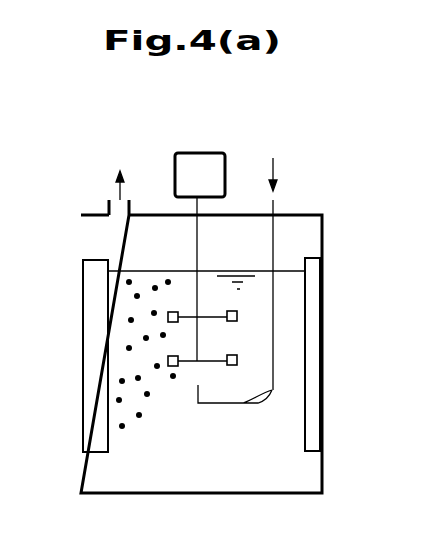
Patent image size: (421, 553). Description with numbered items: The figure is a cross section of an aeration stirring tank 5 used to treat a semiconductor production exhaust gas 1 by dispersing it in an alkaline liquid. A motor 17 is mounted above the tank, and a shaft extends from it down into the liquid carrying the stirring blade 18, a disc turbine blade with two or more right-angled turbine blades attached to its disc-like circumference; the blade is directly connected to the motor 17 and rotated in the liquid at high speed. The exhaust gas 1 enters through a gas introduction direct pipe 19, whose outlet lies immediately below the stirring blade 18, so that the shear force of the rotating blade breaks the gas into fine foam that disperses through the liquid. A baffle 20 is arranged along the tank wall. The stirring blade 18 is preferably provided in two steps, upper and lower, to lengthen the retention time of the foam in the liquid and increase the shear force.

The semiconductor production exhaust gas 1 is at (276, 204).
The aeration stirring tank 5 is at (80, 346).
The motor 17 is at (199, 152).
The stirring blade 18 is at (237, 357).
The gas introduction direct pipe 19 is at (272, 390).
The baffle 20 is at (316, 449).